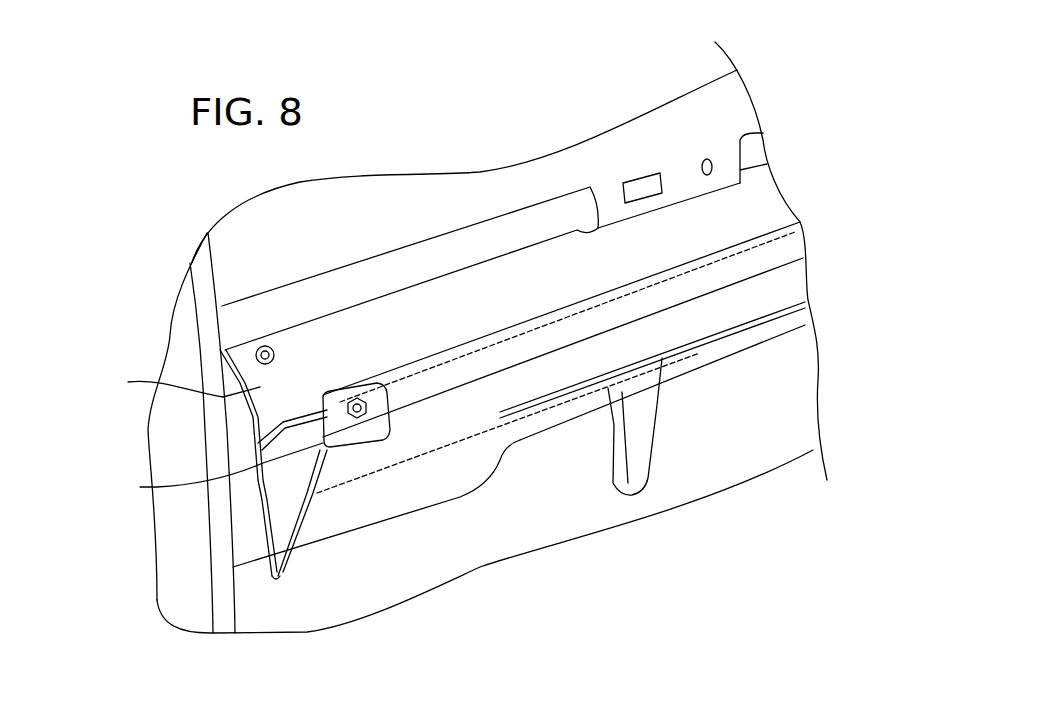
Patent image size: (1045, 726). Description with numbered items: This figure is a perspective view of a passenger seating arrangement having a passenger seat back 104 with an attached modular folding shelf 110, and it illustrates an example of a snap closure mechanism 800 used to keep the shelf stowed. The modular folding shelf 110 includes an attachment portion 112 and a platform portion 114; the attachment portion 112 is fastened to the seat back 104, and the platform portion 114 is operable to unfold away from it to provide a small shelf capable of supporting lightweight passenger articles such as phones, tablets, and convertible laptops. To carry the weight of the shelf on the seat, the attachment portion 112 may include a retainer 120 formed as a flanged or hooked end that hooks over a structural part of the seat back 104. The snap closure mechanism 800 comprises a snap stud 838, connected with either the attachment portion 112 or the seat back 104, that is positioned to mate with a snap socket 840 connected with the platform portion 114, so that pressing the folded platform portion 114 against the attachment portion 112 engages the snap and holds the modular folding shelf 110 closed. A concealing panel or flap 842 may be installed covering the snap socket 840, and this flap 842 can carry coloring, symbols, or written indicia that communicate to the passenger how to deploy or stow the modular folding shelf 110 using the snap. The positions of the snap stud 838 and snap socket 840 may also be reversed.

The snap closure mechanism 800 is at (484, 105).
The seat back 104 is at (208, 330).
The attachment portion 112 is at (177, 382).
The retainer 120 is at (447, 287).
The modular folding shelf 110 is at (718, 315).
The platform portion 114 is at (667, 340).
The snap stud 838 is at (278, 353).
The snap socket 840 is at (387, 450).
The concealing panel or flap 842 is at (215, 464).